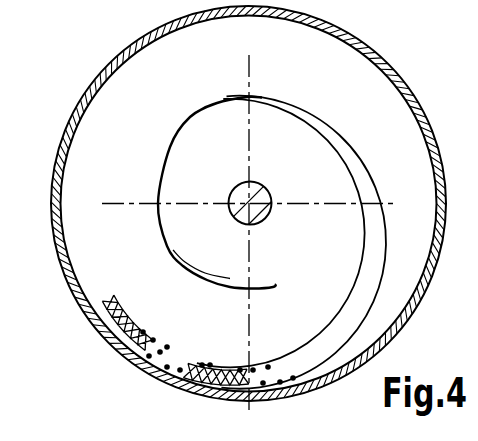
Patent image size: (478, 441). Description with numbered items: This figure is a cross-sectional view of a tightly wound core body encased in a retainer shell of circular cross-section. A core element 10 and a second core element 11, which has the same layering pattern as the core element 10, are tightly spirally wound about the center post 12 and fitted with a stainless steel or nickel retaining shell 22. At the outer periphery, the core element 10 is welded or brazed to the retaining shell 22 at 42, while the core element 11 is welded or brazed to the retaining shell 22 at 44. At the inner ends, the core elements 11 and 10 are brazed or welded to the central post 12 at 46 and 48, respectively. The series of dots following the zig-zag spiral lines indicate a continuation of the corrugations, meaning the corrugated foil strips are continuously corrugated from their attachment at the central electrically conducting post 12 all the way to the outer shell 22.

The core element 10 is at (118, 356).
The second core element 11 is at (182, 357).
The center post 12 is at (236, 189).
The retaining shell 22 is at (88, 97).
The weld or braze joint of core element 10 to shell 42 is at (202, 388).
The weld or braze joint of core element 11 to shell 44 is at (90, 318).
The weld or braze joint of core element 11 to post 46 is at (243, 217).
The weld or braze joint of core element 10 to post 48 is at (250, 180).